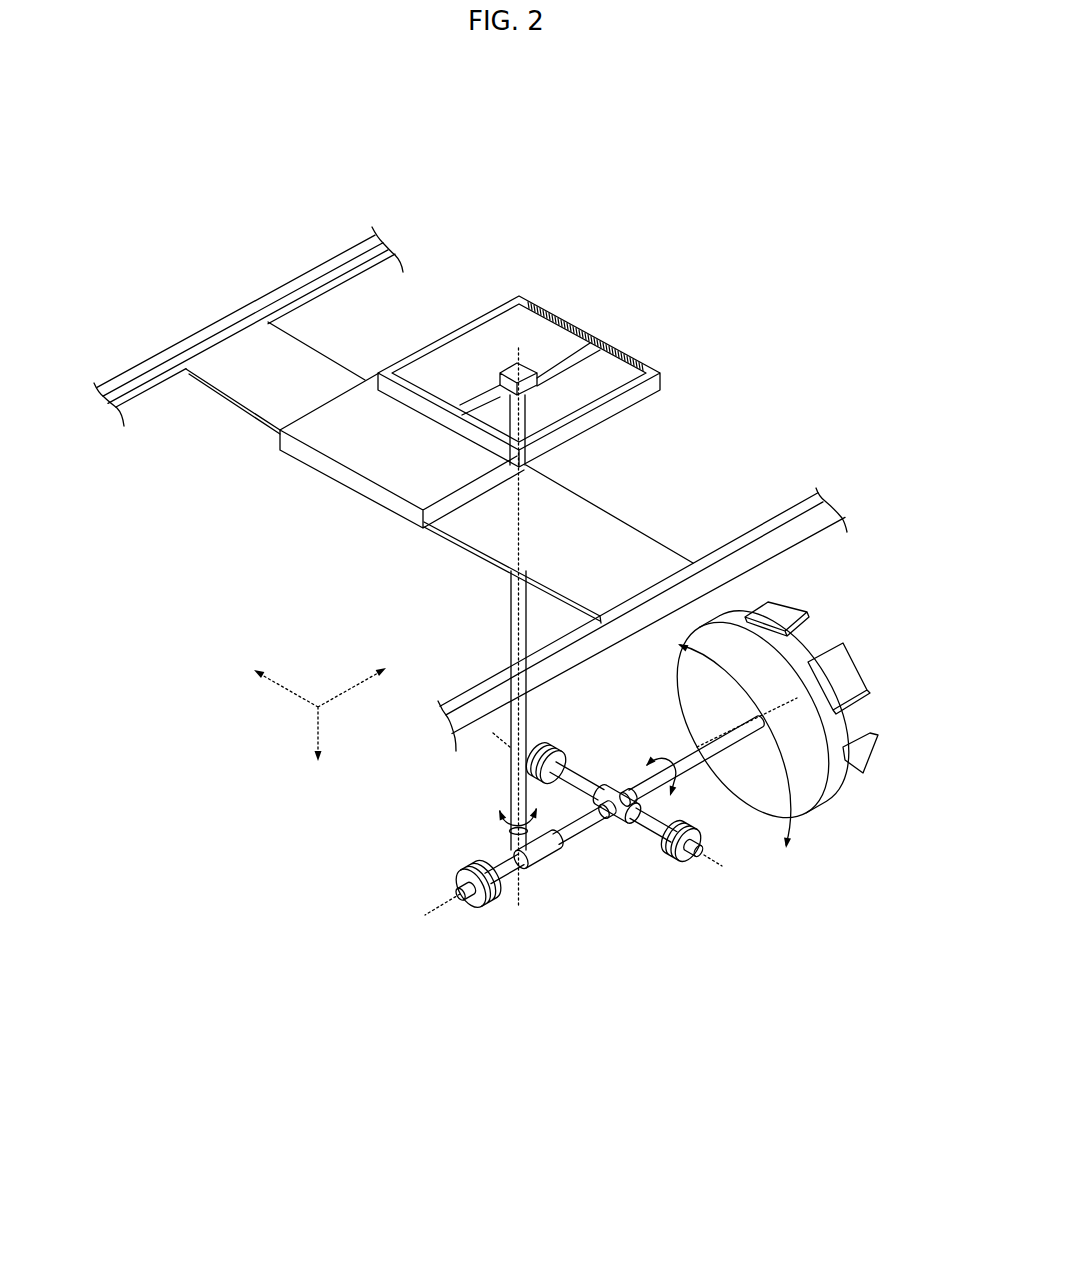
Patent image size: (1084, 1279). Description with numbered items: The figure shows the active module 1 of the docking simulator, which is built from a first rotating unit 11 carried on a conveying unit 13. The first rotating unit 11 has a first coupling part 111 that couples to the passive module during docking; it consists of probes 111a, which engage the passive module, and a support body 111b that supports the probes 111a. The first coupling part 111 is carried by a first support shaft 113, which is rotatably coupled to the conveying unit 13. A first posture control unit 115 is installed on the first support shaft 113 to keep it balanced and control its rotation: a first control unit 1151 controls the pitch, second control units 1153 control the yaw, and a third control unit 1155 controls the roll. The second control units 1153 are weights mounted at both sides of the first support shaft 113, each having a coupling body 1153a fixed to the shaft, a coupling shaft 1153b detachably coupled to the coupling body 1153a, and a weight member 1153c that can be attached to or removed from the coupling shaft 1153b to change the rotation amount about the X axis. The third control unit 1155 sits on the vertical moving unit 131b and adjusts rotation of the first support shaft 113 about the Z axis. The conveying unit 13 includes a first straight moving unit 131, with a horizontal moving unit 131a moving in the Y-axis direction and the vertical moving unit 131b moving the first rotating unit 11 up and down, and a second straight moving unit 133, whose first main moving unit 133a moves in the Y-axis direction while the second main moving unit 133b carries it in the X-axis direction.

The active module 1 is at (229, 152).
The first rotating unit 11 is at (847, 1027).
The first coupling part 111 is at (883, 957).
The probes 111a is at (860, 775).
The support body 111b is at (803, 800).
The first support shaft 113 is at (737, 802).
The first posture control unit 115 is at (647, 1033).
The first control unit 1151 is at (471, 922).
The second control units 1153 is at (690, 968).
The coupling body 1153a is at (602, 823).
The coupling shaft 1153b is at (633, 823).
The weight member 1153c is at (678, 850).
The third control unit 1155 is at (544, 882).
The conveying unit 13 is at (717, 190).
The first straight moving unit 131 is at (737, 254).
The horizontal moving unit 131a is at (606, 331).
The vertical moving unit 131b is at (540, 418).
The second straight moving unit 133 is at (553, 186).
The first main moving unit 133a is at (390, 417).
The second main moving unit 133b is at (317, 373).